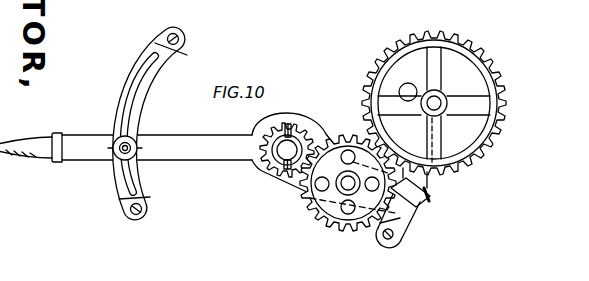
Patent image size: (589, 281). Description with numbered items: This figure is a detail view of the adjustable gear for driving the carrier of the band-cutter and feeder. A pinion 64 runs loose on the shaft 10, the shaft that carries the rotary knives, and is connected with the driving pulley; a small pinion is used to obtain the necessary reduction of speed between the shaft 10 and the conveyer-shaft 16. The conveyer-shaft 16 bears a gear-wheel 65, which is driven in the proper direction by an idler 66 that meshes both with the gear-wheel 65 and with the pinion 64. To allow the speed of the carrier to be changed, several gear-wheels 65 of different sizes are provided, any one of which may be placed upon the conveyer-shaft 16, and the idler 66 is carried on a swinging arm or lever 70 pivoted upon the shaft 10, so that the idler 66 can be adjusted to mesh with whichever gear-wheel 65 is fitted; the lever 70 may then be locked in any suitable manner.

The shaft 10 is at (291, 153).
The conveyer-shaft 16 is at (441, 97).
The pinion 64 is at (276, 167).
The gear-wheel 65 is at (451, 103).
The idler 66 is at (332, 225).
The swinging arm or lever 70 is at (126, 147).